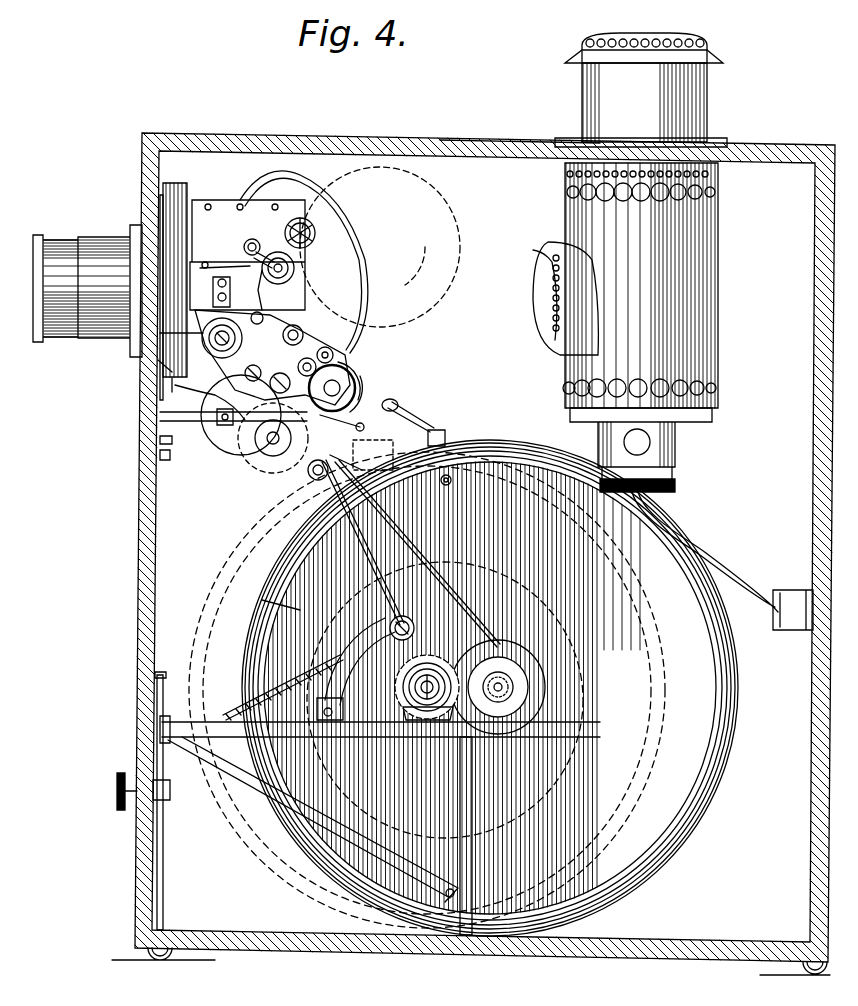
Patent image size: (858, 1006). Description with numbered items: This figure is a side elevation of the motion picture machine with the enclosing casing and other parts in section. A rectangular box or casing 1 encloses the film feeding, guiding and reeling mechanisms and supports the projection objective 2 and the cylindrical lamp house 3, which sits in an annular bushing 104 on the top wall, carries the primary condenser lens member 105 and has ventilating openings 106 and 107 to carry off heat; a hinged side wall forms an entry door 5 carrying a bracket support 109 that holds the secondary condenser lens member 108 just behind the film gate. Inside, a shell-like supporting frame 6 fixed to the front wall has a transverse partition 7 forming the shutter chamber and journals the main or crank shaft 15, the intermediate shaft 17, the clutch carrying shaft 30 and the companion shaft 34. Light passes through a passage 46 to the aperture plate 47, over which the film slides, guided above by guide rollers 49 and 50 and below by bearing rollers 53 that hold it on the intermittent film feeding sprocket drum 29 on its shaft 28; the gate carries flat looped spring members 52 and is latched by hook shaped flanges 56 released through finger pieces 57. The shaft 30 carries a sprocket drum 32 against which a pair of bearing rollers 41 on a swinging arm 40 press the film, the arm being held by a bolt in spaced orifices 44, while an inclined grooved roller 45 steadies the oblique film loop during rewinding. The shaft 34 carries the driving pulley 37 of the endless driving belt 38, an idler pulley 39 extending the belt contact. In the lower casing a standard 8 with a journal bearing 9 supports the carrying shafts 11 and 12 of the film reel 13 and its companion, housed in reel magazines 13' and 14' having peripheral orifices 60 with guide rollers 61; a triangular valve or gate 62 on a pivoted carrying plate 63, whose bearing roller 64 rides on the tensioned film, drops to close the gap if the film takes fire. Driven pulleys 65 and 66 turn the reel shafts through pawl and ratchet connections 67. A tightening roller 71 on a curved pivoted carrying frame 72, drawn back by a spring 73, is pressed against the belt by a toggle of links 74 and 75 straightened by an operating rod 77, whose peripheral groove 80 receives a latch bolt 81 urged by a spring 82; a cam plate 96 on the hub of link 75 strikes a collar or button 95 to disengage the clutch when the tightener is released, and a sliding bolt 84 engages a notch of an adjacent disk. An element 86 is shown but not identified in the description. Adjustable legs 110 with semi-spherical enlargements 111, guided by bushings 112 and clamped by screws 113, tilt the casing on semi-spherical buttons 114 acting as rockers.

The box or casing 1 is at (140, 169).
The projection objective 2 is at (87, 291).
The lamp house 3 is at (641, 315).
The entry door 5 is at (460, 142).
The supporting frame or casing 6 is at (216, 202).
The transverse partition 7 is at (173, 291).
The frame or standard 8 is at (240, 790).
The journal bearing 9 is at (400, 712).
The carrying shaft 11 is at (414, 685).
The carrying shaft 12 is at (525, 660).
The film reel 13 is at (427, 690).
The reel magazine 13' is at (425, 690).
The reel magazine 14' is at (266, 600).
The main or crank shaft 15 is at (298, 326).
The intermediate shaft 17 is at (290, 272).
The shaft 28 is at (166, 368).
The intermittent film feeding sprocket drum 29 is at (160, 336).
The clutch carrying shaft 30 is at (331, 396).
The sprocket drum 32 is at (352, 378).
The companion shaft 34 is at (273, 438).
The driving pulley 37 is at (255, 452).
The endless driving belt 38 is at (392, 580).
The idler pulley 39 is at (310, 476).
The swinging arm 40 is at (280, 375).
The bearing rollers 41 is at (314, 360).
The spaced orifices 44 is at (324, 347).
The peripherally grooved roller 45 is at (316, 236).
The light passage or aperture 46 is at (225, 257).
The aperture plate 47 is at (212, 292).
The guide roller 49 is at (254, 240).
The companion guide roller 50 is at (246, 244).
The vertical spring members 52 is at (262, 314).
The bearing rollers 53 is at (244, 342).
The hook shaped flanges 56 is at (268, 260).
The outturned prongs or finger pieces 57 is at (288, 268).
The peripheral orifices 60 is at (434, 485).
The guide and friction reducing rollers 61 is at (361, 458).
The swinging valve or gate 62 is at (428, 430).
The carrying plate or frame 63 is at (442, 430).
The bearing roller 64 is at (398, 403).
The driven pulley 65 is at (432, 665).
The driven pulley 66 is at (530, 695).
The pawl and ratchet connections 67 is at (515, 685).
The tightening roller or drum 71 is at (416, 626).
The carrying frame 72 is at (360, 661).
The spring 73 is at (258, 686).
The link 74 is at (345, 538).
The companion link 75 is at (342, 428).
The operating rod 77 is at (230, 410).
The peripheral groove 80 is at (167, 421).
The latch bolt 81 is at (172, 441).
The spring 82 is at (170, 455).
The sliding bolt 84 is at (172, 384).
The spring wire 86 is at (210, 395).
The collar or button 95 is at (362, 386).
The cam plate 96 is at (358, 370).
The annular bushing 104 is at (582, 128).
The primary lens member 105 is at (638, 50).
The ventilating openings 106 is at (640, 200).
The ventilating openings 107 is at (617, 378).
The companion condenser lens member 108 is at (362, 262).
The bracket support 109 is at (362, 290).
The adjustable legs 110 is at (165, 866).
The semi-spherical enlargements 111 is at (130, 940).
The guide bushings 112 is at (171, 790).
The clamping screws 113 is at (112, 791).
The semi-spherical buttons 114 is at (800, 948).